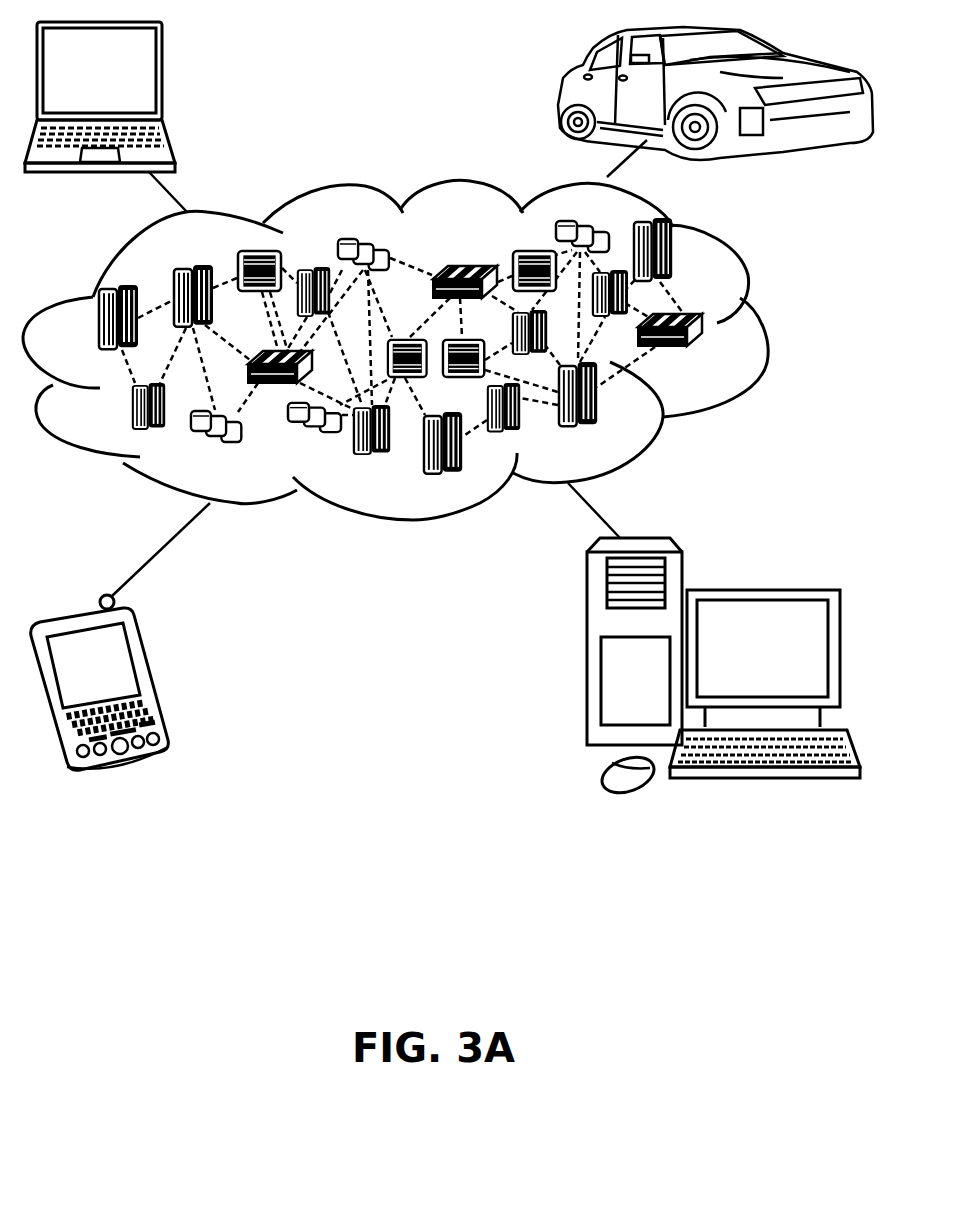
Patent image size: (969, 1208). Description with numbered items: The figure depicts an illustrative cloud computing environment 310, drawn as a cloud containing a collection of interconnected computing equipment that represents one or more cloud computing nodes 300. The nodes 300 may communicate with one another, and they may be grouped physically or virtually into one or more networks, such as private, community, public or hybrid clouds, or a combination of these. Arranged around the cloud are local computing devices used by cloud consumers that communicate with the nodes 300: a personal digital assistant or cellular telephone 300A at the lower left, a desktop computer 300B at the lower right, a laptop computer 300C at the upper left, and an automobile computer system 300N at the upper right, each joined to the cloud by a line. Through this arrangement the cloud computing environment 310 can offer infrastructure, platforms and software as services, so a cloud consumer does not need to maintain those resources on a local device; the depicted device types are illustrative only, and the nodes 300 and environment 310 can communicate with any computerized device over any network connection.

The cloud computing nodes 300 is at (714, 360).
The cloud computing environment 310 is at (763, 332).
The personal digital assistant (PDA) or cellular telephone 300A is at (153, 677).
The desktop computer 300B is at (762, 590).
The laptop computer 300C is at (162, 78).
The automobile computer system 300N is at (560, 93).